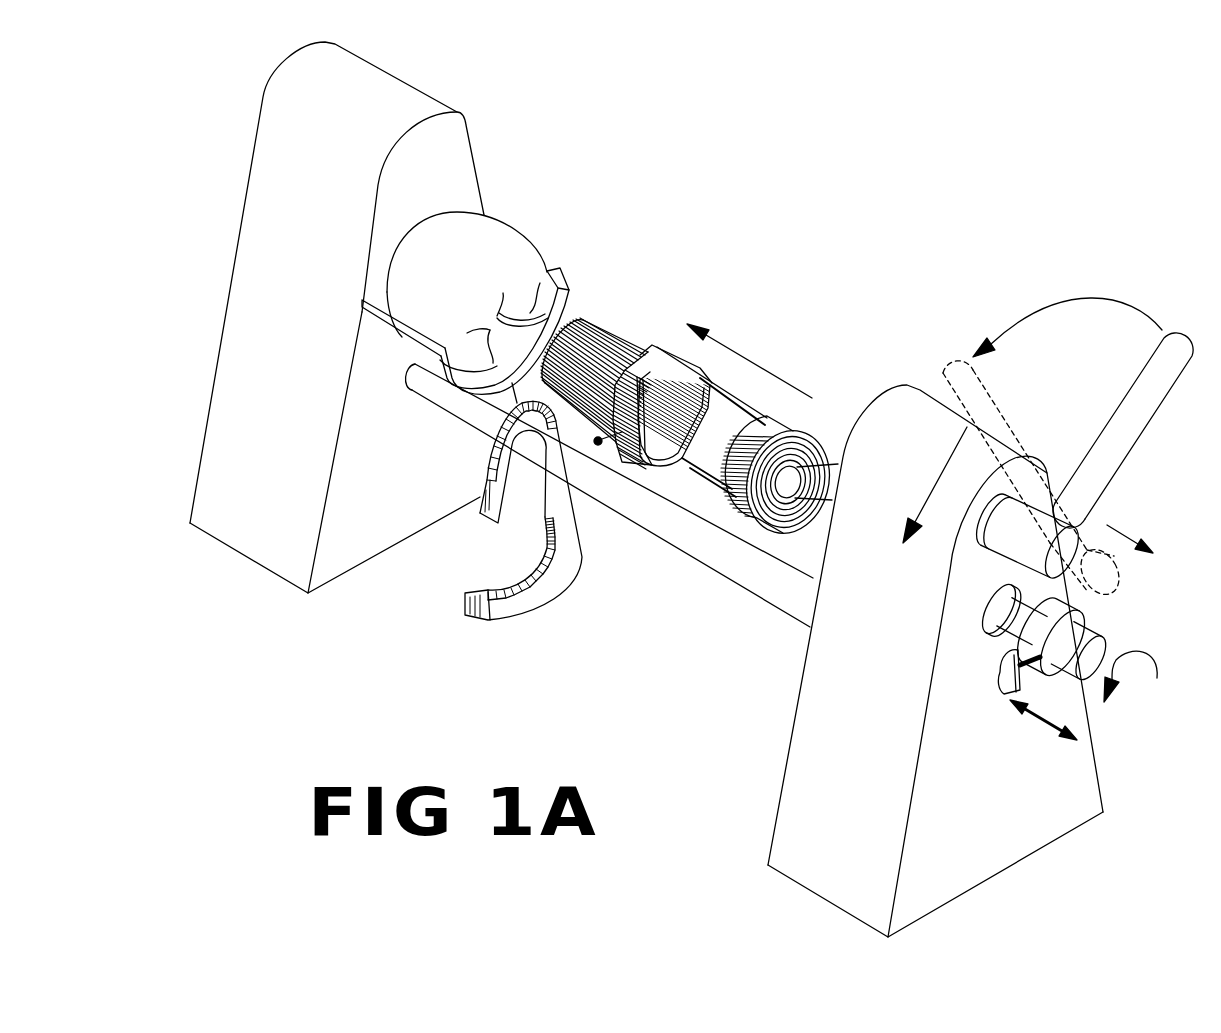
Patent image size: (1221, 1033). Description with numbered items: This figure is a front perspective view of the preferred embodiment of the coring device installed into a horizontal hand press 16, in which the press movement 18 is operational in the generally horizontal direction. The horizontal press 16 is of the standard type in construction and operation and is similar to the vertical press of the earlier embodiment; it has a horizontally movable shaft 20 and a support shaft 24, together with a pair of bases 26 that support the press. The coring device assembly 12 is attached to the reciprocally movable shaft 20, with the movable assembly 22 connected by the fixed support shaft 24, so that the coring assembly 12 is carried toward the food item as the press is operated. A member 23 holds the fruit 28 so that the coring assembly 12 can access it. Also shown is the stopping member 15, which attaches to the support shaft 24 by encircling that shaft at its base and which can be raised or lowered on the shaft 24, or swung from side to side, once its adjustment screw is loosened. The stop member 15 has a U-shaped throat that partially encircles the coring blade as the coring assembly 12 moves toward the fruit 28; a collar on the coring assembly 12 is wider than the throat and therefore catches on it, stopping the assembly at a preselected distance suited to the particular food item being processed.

The coring device assembly 12 is at (693, 521).
The stopping member 15 is at (497, 607).
The horizontal hand press 16 is at (905, 400).
The press movement 18 is at (1178, 358).
The movable shaft 20 is at (807, 493).
The upper movable assembly 22 is at (1098, 665).
The member for holding the fruit 23 is at (567, 287).
The support shaft 24 is at (772, 585).
The bases 26 is at (333, 557).
The fruit or vegetable 28 is at (515, 258).